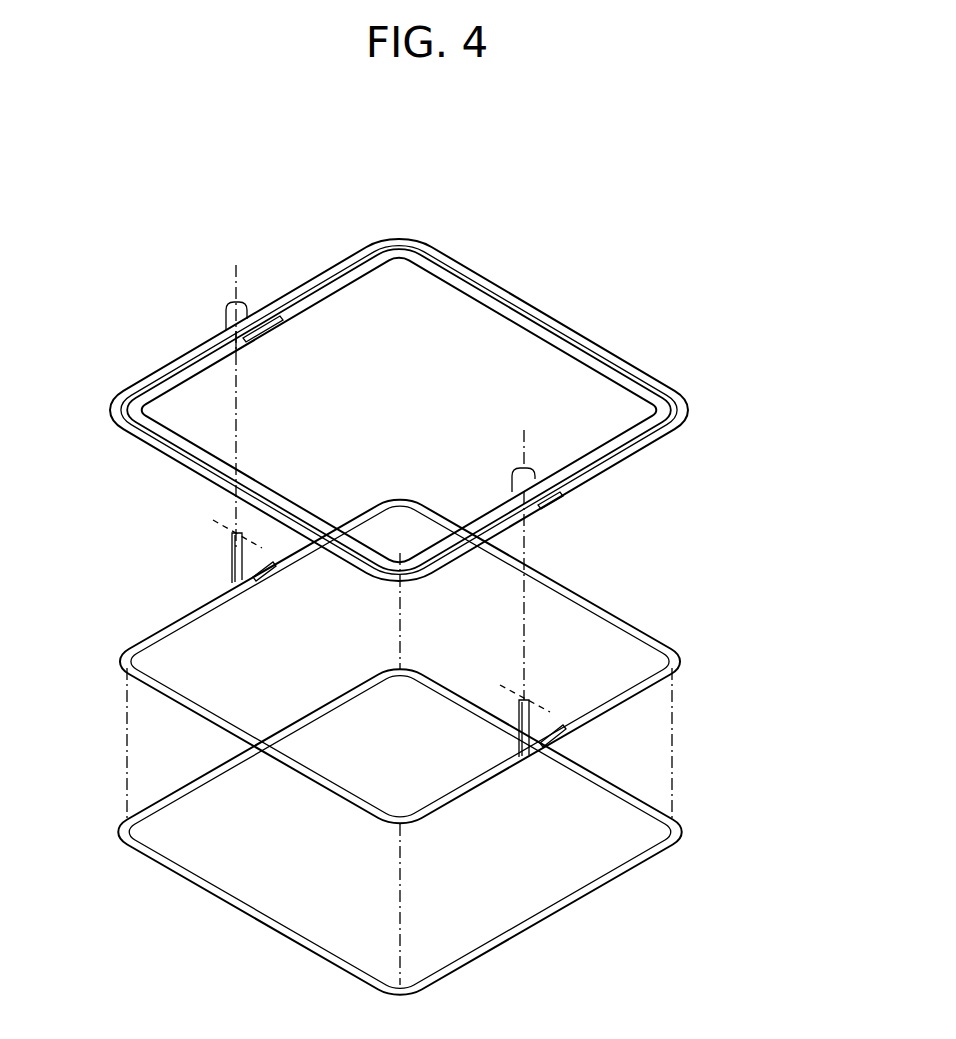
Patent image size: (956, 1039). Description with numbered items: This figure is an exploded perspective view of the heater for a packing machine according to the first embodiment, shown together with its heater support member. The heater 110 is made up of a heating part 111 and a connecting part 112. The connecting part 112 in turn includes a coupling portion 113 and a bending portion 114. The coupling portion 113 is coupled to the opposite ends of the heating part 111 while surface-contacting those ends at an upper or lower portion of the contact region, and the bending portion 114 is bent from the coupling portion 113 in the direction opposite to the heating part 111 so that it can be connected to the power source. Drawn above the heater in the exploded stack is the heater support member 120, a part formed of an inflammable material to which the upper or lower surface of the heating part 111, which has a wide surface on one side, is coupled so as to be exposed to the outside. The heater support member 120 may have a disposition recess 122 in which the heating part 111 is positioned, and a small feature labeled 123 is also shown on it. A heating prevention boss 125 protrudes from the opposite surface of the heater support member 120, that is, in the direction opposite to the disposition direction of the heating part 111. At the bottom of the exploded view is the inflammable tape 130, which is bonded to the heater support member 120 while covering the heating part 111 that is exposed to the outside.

The heater 110 is at (429, 742).
The heating part 111 is at (122, 658).
The connecting part 112 is at (319, 633).
The coupling portion 113 is at (232, 576).
The bending portion 114 is at (228, 548).
The heater support member 120 is at (657, 370).
The disposition recess 122 is at (378, 258).
The coupling hole 123 is at (260, 322).
The heating prevention boss 125 is at (230, 317).
The inflammable tape 130 is at (516, 940).